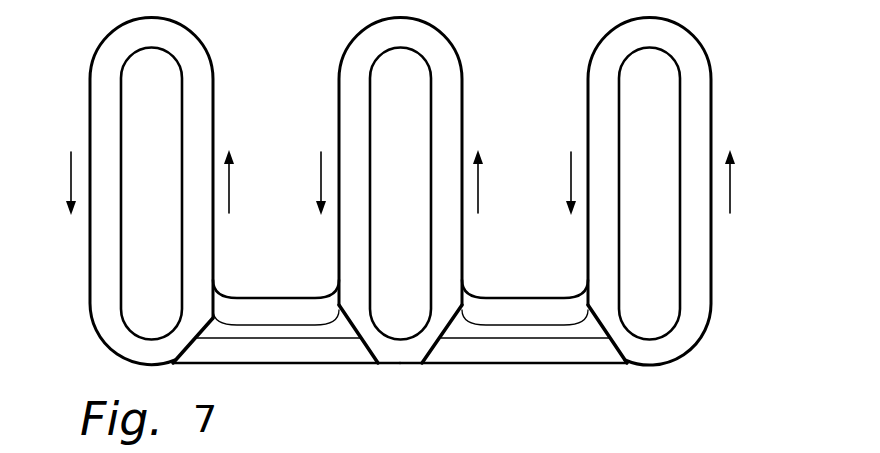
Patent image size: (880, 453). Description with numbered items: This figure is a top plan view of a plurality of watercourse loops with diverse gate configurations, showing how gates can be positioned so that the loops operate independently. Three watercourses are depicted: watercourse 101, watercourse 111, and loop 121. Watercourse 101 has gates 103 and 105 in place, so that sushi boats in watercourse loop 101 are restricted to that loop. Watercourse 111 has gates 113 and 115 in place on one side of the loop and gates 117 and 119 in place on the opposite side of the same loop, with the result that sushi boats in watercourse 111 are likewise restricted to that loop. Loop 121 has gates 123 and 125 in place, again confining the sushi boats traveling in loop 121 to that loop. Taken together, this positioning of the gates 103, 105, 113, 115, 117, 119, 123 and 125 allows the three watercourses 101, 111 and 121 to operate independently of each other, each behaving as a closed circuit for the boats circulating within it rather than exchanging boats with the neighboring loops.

The watercourse 101 is at (230, 105).
The gate 103 is at (217, 303).
The gate 105 is at (193, 347).
The watercourse 111 is at (477, 104).
The gate 113 is at (343, 302).
The gate 115 is at (358, 340).
The gate 117 is at (464, 302).
The gate 119 is at (443, 342).
The loop 121 is at (725, 102).
The gate 123 is at (593, 302).
The gate 125 is at (610, 342).